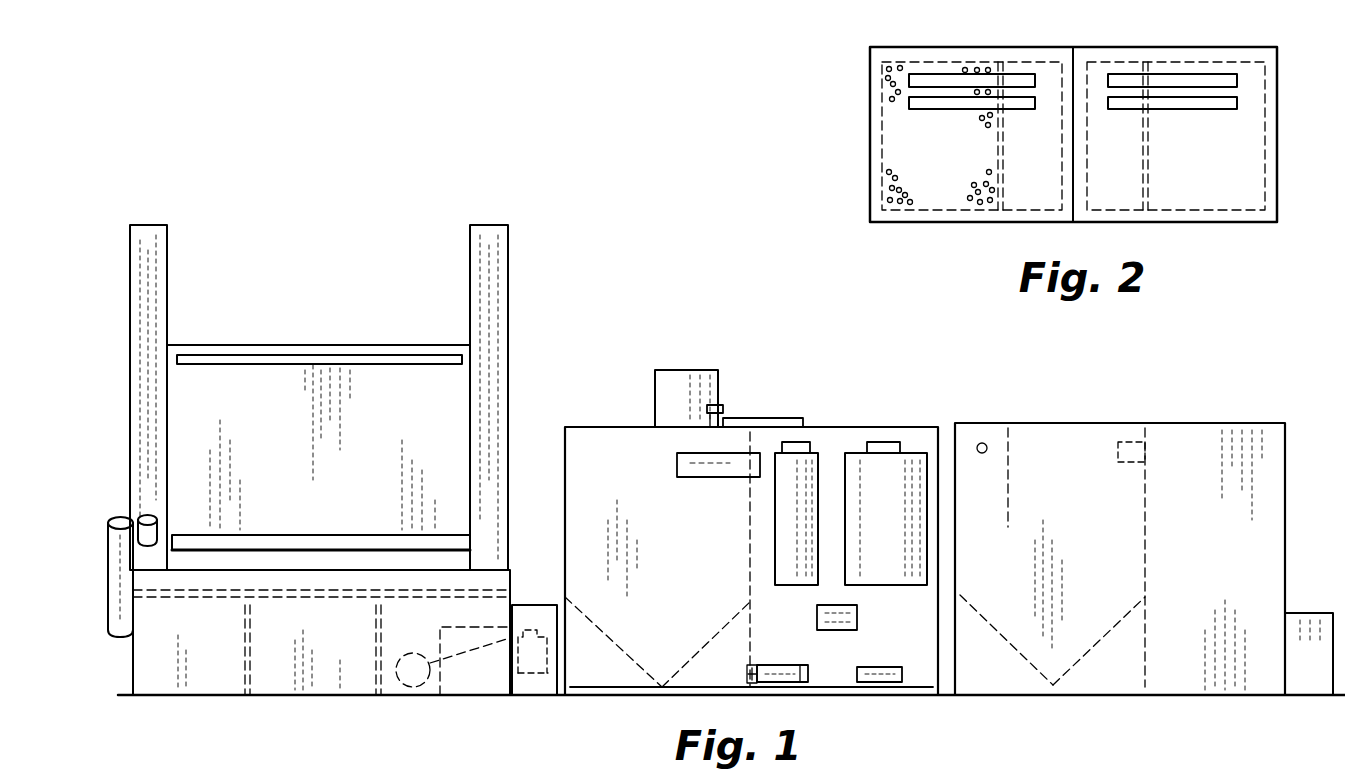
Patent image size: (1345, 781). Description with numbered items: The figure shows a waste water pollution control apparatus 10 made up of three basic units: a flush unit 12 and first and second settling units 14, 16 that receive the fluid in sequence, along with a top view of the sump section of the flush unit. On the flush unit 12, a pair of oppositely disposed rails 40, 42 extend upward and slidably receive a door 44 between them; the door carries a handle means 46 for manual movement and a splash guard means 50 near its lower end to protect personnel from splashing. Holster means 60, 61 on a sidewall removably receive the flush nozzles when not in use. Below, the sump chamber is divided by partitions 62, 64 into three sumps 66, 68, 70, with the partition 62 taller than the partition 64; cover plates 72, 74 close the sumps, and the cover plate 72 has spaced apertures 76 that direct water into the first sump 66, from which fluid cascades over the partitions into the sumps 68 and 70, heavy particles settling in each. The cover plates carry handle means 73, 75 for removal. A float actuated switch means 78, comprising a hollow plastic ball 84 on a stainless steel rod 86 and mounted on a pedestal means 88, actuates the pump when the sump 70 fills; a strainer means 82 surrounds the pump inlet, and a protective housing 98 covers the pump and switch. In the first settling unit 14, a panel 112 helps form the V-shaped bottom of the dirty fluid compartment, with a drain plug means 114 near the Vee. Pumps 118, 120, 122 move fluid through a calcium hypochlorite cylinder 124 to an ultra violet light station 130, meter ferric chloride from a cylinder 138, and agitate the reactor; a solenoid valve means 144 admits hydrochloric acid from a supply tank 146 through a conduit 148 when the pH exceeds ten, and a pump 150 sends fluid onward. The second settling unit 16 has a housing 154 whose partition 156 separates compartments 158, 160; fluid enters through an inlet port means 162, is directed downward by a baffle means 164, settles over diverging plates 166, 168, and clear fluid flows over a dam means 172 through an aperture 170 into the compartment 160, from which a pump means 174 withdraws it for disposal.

In FIG. 1, the waste water pollution control apparatus 10 is at (603, 708).
In FIG. 1, the flush unit 12 is at (350, 672).
In FIG. 1, the first settling unit 14 is at (840, 672).
In FIG. 1, the second settling unit 16 is at (1177, 662).
In FIG. 1, the rail 40 is at (158, 275).
In FIG. 1, the rail 42 is at (498, 272).
In FIG. 1, the door 44 is at (284, 375).
In FIG. 1, the handle means 46 is at (403, 357).
In FIG. 1, the splash guard means 50 is at (337, 540).
In FIG. 1, the holster means 60 is at (148, 518).
In FIG. 1, the holster means 61 is at (120, 518).
In FIG. 1, the partition 62 is at (245, 633).
In FIG. 2, the partition 62 is at (1005, 172).
In FIG. 1, the partition 64 is at (376, 635).
In FIG. 2, the partition 64 is at (1150, 187).
In FIG. 1, the first sump 66 is at (207, 690).
In FIG. 1, the second sump 68 is at (272, 683).
In FIG. 1, the sump 70 is at (425, 690).
In FIG. 2, the cover plate 72 is at (935, 198).
In FIG. 2, the handle means 73 is at (947, 80).
In FIG. 2, the cover plate 74 is at (1227, 198).
In FIG. 2, the right slots 75 is at (1185, 80).
In FIG. 2, the apertures 76 is at (898, 176).
In FIG. 1, the float actuated switch means 78 is at (528, 633).
In FIG. 1, the strainer means 82 is at (440, 685).
In FIG. 1, the hollow plastic ball 84 is at (413, 653).
In FIG. 1, the stainless steel rod 86 is at (482, 652).
In FIG. 1, the pedestal means 88 is at (533, 667).
In FIG. 1, the protective housing 98 is at (558, 650).
In FIG. 1, the panel 112 is at (725, 625).
In FIG. 1, the drain plug means 114 is at (610, 635).
In FIG. 1, the pump 118 is at (805, 668).
In FIG. 1, the pump 120 is at (893, 668).
In FIG. 1, the pump 122 is at (858, 617).
In FIG. 1, the cylinder 124 is at (790, 525).
In FIG. 1, the ultra violet light station 130 is at (690, 470).
In FIG. 1, the cylinder 138 is at (900, 490).
In FIG. 1, the solenoid valve means 144 is at (727, 405).
In FIG. 1, the hydrochloric acid supply tank 146 is at (678, 375).
In FIG. 1, the conduit 148 is at (790, 418).
In FIG. 1, the pump 150 is at (752, 665).
In FIG. 1, the housing 154 is at (985, 423).
In FIG. 1, the partition 156 is at (1147, 525).
In FIG. 1, the compartment 158 is at (1085, 455).
In FIG. 1, the compartment 160 is at (1222, 533).
In FIG. 1, the inlet port means 162 is at (987, 448).
In FIG. 1, the baffle means 164 is at (1010, 500).
In FIG. 1, the plate 166 is at (1117, 618).
In FIG. 1, the plate 168 is at (983, 615).
In FIG. 1, the aperture 170 is at (1145, 443).
In FIG. 1, the dam means 172 is at (1118, 462).
In FIG. 1, the pump means 174 is at (1310, 613).